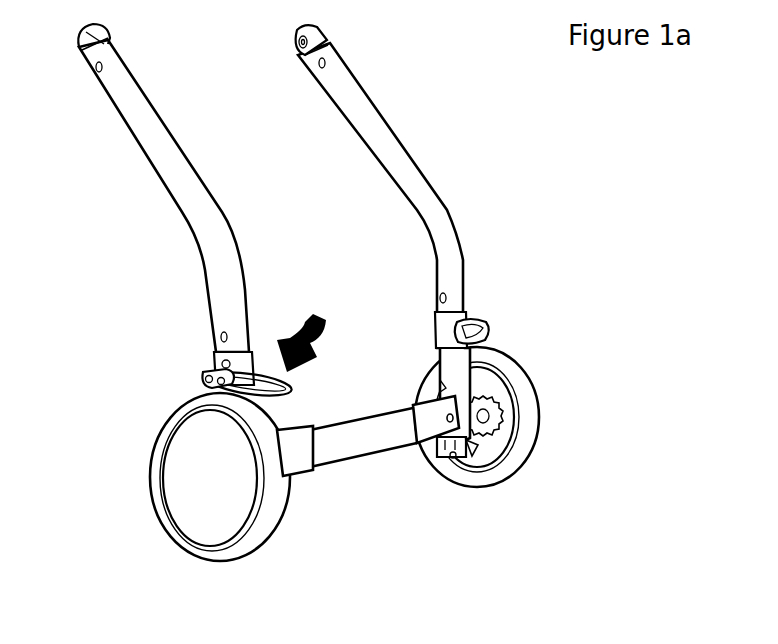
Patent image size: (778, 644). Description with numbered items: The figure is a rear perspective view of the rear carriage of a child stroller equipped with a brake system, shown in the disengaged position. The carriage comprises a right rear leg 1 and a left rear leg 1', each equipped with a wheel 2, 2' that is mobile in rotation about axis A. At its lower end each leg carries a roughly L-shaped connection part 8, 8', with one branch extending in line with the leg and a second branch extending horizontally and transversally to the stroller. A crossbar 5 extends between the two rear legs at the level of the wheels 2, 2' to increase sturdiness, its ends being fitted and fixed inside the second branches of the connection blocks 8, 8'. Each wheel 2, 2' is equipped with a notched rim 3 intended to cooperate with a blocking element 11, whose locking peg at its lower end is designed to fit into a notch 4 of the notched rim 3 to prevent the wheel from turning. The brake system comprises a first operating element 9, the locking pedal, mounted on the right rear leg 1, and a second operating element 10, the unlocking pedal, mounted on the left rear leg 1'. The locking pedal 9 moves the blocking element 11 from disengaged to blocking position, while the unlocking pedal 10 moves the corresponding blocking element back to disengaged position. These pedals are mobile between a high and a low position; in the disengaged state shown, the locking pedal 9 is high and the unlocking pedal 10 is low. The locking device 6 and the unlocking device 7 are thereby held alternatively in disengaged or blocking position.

The right rear leg 1 is at (402, 233).
The left rear leg 1' is at (153, 204).
The wheel 2 is at (518, 405).
The wheel 2' is at (173, 473).
The notched rim 3 is at (518, 370).
The notch 4 is at (512, 418).
The crossbar 5 is at (323, 473).
The locking device 6 is at (408, 313).
The unlocking device 7 is at (270, 344).
The connection part 8 is at (441, 472).
The connection part 8' is at (169, 355).
The first operating element 9 is at (480, 317).
The second operating element 10 is at (288, 387).
The blocking element 11 is at (470, 470).
The axis A is at (206, 481).